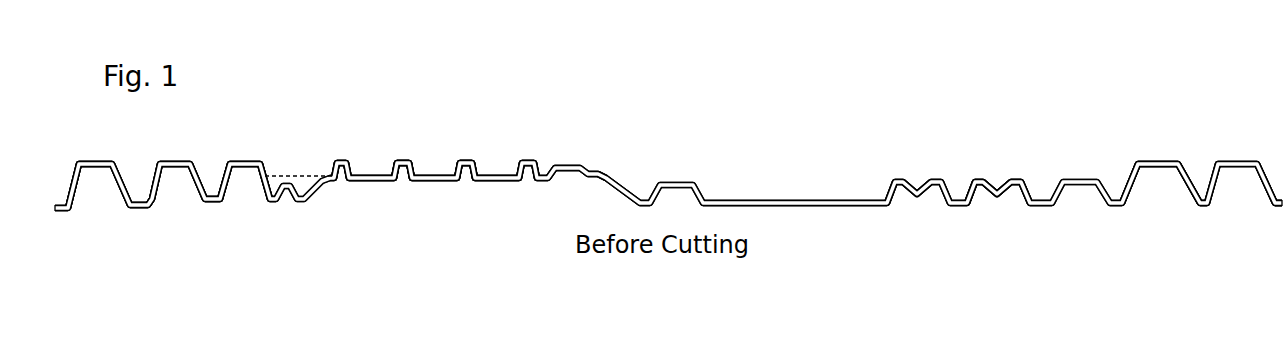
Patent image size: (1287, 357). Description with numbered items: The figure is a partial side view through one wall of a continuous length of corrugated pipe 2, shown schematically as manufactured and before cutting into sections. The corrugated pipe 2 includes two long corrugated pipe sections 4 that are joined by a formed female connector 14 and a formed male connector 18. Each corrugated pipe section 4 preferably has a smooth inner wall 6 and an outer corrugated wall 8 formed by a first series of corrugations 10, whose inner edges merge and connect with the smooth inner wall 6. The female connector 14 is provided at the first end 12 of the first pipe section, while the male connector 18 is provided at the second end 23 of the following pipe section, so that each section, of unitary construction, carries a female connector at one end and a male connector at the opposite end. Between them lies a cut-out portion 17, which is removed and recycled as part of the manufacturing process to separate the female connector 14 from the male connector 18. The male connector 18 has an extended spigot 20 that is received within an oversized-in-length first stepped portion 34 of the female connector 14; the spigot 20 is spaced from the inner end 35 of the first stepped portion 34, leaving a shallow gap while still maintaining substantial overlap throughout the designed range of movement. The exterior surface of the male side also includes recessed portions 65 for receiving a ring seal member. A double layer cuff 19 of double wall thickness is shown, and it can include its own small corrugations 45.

The corrugated pipe 2 is at (820, 129).
The corrugated pipe section 4 is at (145, 134).
The smooth inner wall 6 is at (95, 213).
The outer corrugated wall 8 is at (90, 158).
The first series of corrugations 10 is at (1209, 222).
The first end 12 is at (147, 216).
The female connector 14 is at (472, 152).
The cut-out portion 17 is at (635, 172).
The male connector 18 is at (965, 152).
The double layer cuff 19 is at (439, 188).
The extended spigot 20 is at (811, 210).
The second end 23 is at (1222, 249).
The first stepped portion 34 is at (222, 211).
The inner end 35 is at (168, 216).
The small corrugations 45 is at (333, 160).
The recessed portions 65 is at (918, 181).